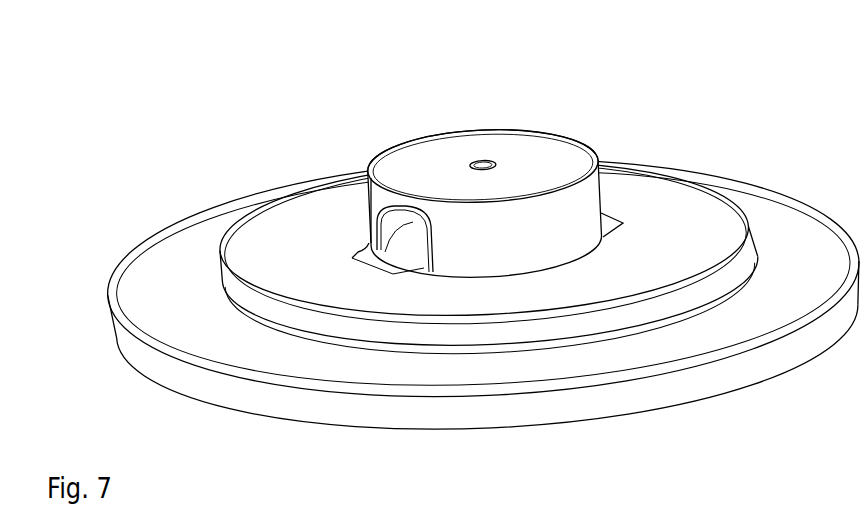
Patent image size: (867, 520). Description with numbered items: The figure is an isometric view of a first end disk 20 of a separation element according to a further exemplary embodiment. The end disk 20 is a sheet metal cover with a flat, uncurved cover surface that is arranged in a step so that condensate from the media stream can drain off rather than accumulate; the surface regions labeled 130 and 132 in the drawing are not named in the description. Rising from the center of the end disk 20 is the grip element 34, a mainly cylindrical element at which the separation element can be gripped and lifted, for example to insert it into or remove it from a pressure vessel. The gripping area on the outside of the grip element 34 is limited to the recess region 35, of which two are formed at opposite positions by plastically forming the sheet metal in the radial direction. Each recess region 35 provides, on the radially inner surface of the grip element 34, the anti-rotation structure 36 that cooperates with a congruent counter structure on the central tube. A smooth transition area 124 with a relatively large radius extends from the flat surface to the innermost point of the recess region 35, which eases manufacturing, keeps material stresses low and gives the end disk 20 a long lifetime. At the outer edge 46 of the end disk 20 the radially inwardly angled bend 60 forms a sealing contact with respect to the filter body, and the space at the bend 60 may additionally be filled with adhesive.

The first end disk 20 is at (704, 102).
The grip element 34 is at (368, 158).
The recess region 35 is at (369, 216).
The anti-rotation structure 36 is at (420, 222).
The transition area 124 is at (363, 248).
The outer top surface of disc 130 is at (167, 252).
The raised platform 132 is at (649, 194).
The outer edge 46 is at (112, 305).
The radially inwardly angled bend 60 is at (124, 347).